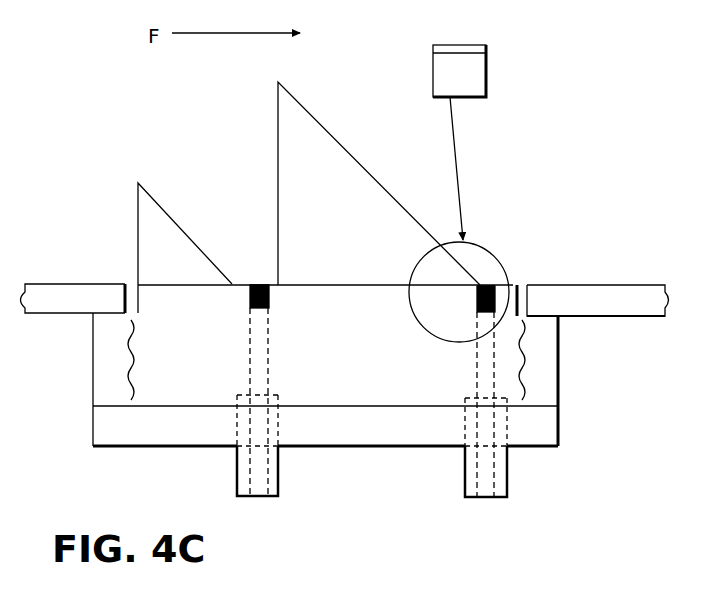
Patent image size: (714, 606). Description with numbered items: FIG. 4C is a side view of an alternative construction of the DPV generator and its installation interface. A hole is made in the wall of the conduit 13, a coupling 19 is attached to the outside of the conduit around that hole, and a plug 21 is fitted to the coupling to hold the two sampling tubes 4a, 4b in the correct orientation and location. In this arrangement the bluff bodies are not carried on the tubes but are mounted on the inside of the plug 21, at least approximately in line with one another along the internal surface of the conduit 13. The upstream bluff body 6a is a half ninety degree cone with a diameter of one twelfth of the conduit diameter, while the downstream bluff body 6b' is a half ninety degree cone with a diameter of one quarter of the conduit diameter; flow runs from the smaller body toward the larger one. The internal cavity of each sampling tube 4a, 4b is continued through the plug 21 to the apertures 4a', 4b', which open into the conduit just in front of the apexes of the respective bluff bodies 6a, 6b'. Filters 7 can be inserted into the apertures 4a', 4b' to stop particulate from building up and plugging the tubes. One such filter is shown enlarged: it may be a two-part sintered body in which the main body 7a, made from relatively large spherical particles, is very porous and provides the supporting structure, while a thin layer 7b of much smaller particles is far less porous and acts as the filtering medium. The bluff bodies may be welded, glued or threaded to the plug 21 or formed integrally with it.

The conduit 13 is at (613, 284).
The coupling 19 is at (562, 387).
The plug 21 is at (562, 451).
The sampling tube 4a is at (280, 430).
The sampling tube 4b is at (512, 432).
The aperture 4a' is at (240, 240).
The aperture 4b' is at (463, 255).
The filter 7 is at (269, 284).
The upstream bluff body 6a is at (159, 204).
The downstream bluff body 6b' is at (379, 183).
The main body of the filter 7a is at (483, 100).
The thin layer 7b is at (477, 44).